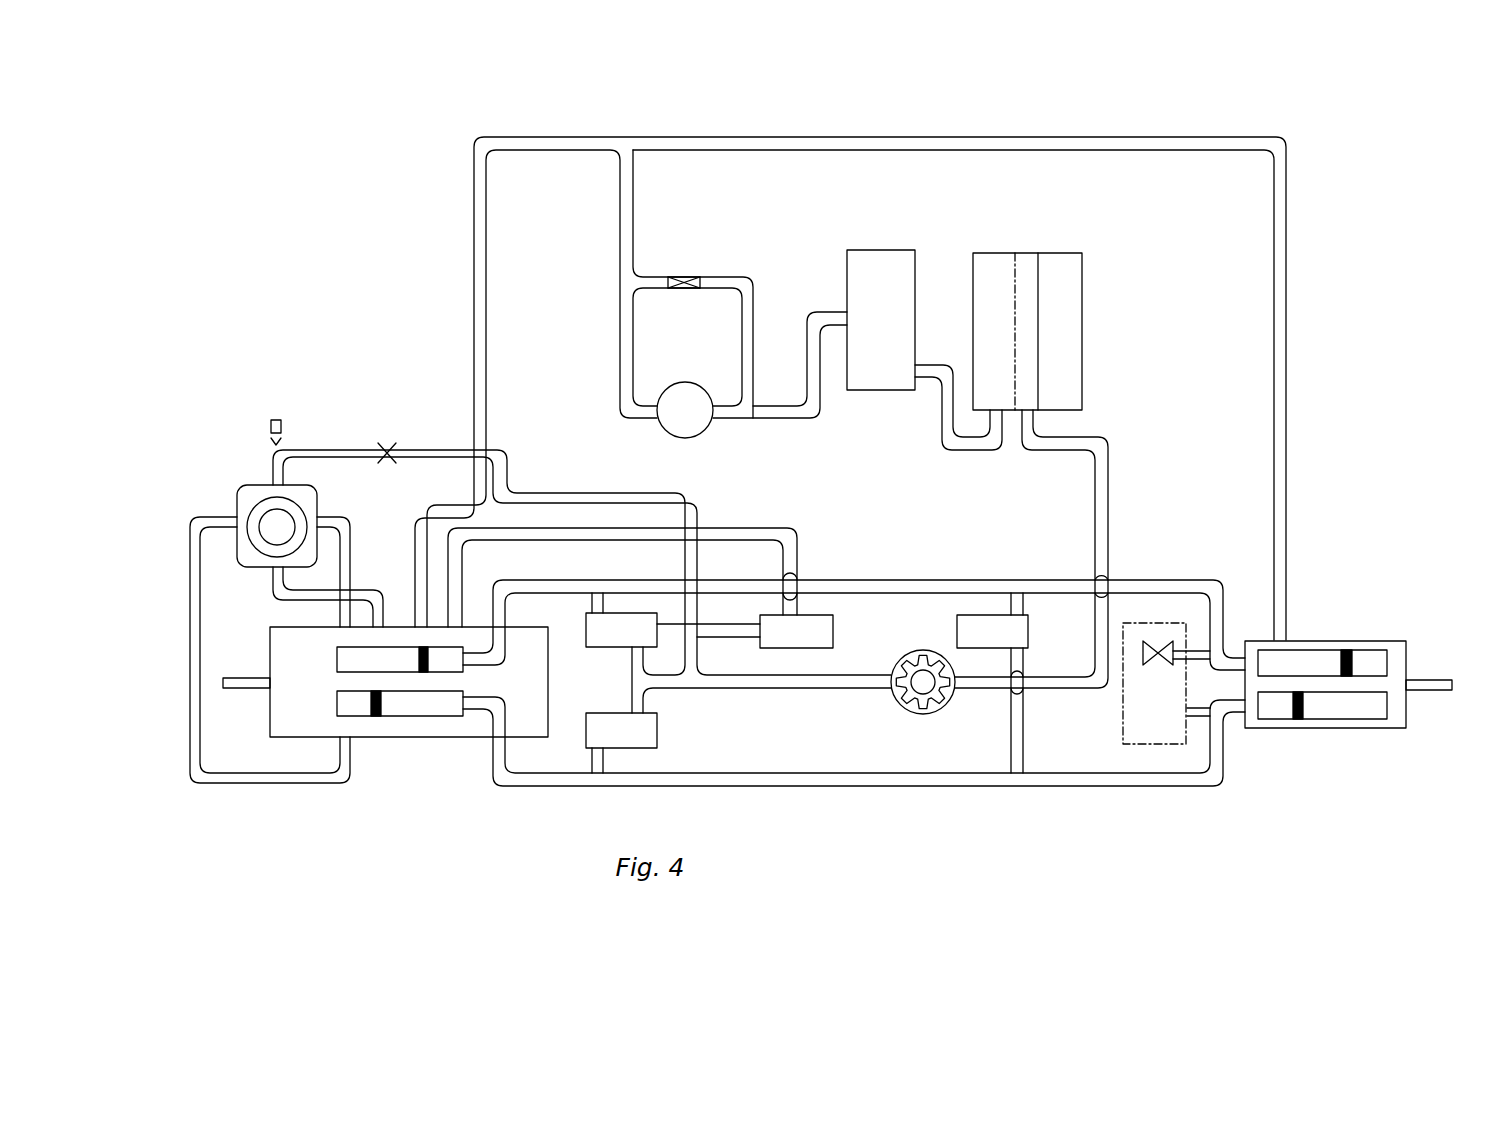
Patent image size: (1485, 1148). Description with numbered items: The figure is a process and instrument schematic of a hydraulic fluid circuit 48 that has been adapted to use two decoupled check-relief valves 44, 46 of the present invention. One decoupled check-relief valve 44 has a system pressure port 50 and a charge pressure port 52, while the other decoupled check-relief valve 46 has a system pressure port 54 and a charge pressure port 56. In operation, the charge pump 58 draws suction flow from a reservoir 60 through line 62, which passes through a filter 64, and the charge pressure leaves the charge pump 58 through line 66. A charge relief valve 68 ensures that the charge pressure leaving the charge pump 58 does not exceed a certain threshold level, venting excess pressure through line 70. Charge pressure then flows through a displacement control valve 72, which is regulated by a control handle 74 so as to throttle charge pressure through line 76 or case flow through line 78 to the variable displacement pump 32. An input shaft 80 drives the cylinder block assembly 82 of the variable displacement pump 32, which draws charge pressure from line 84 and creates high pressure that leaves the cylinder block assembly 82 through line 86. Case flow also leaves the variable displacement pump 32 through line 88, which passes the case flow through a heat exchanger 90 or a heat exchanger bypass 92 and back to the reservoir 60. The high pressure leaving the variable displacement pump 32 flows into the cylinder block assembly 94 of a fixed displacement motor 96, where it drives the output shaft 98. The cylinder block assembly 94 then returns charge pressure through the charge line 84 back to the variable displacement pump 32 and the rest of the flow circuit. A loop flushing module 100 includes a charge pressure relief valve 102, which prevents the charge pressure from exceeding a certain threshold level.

The variable displacement pump 32 is at (428, 760).
The decoupled check-relief valve 44 is at (660, 733).
The decoupled check-relief valve 46 is at (660, 630).
The hydraulic fluid circuit 48 is at (340, 322).
The system pressure port 50 is at (590, 748).
The charge pressure port 52 is at (630, 712).
The system pressure port 54 is at (590, 612).
The charge pressure port 56 is at (630, 650).
The charge pump 58 is at (906, 710).
The reservoir 60 is at (883, 250).
The line 62 is at (1108, 490).
The filter 64 is at (1082, 308).
The line 66 is at (806, 689).
The charge relief valve 68 is at (833, 626).
The line 70 is at (752, 528).
The displacement control valve 72 is at (233, 499).
The control handle 74 is at (270, 428).
The line 76 is at (350, 556).
The line 78 is at (190, 630).
The input shaft 80 is at (248, 692).
The cylinder block assembly 82 is at (338, 703).
The line 84 is at (895, 580).
The line 86 is at (913, 787).
The line 88 is at (560, 137).
The heat exchanger 90 is at (686, 438).
The heat exchanger bypass 92 is at (680, 277).
The cylinder block assembly 94 is at (1320, 650).
The fixed displacement motor 96 is at (1332, 728).
The output shaft 98 is at (1428, 678).
The loop flushing module 100 is at (1187, 712).
The charge pressure relief valve 102 is at (1158, 640).